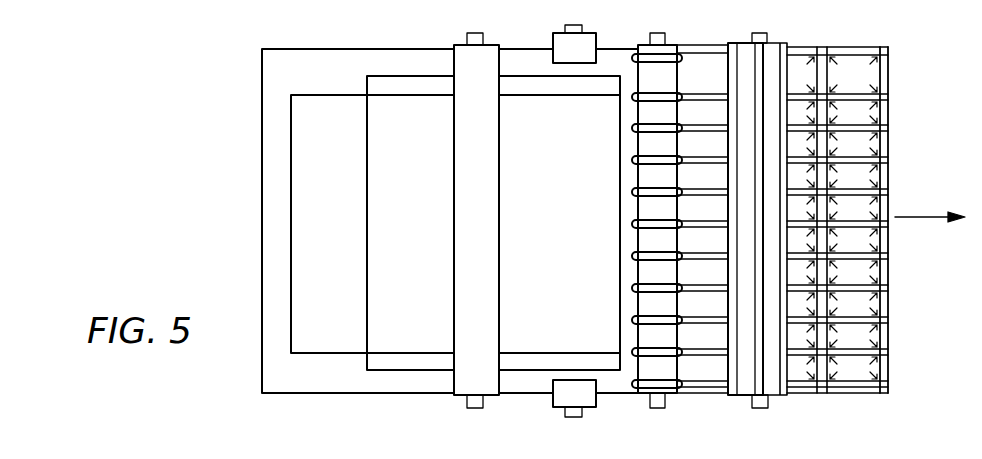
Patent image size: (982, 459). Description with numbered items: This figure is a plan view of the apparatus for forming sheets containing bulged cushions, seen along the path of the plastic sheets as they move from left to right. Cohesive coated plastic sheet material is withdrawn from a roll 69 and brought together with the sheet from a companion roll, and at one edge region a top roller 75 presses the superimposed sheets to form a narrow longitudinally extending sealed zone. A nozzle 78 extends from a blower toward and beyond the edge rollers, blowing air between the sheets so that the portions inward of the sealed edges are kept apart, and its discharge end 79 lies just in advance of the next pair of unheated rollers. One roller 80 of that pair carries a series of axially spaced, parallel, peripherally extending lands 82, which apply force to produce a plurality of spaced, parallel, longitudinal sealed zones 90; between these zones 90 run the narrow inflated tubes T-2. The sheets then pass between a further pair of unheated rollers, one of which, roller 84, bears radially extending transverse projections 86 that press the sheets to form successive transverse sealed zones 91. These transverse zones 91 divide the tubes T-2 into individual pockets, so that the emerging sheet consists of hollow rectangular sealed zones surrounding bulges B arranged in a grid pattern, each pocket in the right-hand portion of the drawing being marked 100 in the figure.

The roll of cohesive coated plastic sheet material 69 is at (316, 68).
The top roller 75 is at (562, 45).
The nozzle 78 is at (430, 204).
The discharge end 79 is at (622, 202).
The unheated roller 80 is at (648, 52).
The peripherally extending lands 82 is at (665, 98).
The unheated roller 84 is at (742, 52).
The radially extending transverse projections 86 is at (762, 55).
The sealed zones 90 is at (880, 57).
The transverse sealed zones 91 is at (822, 70).
The tray 100 is at (866, 192).
The bulges B is at (870, 113).
The parallel inflated tubes T-2 is at (718, 155).